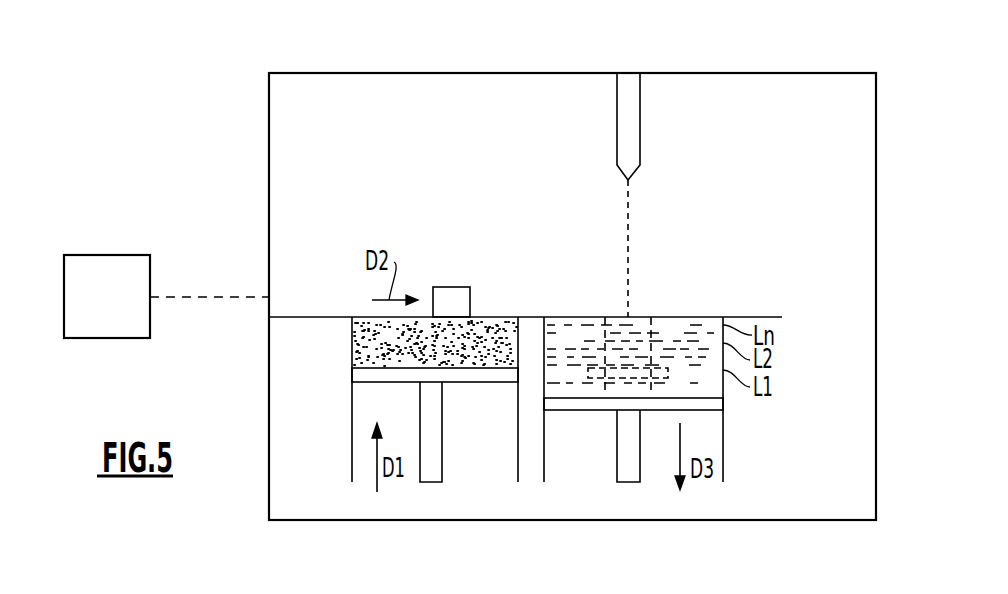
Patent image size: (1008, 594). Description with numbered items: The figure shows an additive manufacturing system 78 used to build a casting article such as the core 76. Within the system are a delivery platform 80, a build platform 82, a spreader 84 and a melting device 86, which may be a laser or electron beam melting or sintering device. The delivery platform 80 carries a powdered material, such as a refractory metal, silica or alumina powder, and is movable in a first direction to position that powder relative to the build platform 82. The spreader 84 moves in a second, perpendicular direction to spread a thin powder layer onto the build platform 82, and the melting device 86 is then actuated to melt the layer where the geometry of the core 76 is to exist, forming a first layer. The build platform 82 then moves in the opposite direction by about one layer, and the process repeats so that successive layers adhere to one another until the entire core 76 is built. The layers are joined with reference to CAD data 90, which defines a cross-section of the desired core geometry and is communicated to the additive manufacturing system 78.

The core 76 is at (640, 322).
The additive manufacturing system 78 is at (425, 73).
The delivery platform 80 is at (463, 373).
The build platform 82 is at (604, 403).
The spreader 84 is at (449, 298).
The melting device 86 is at (631, 118).
The CAD data 90 is at (91, 255).